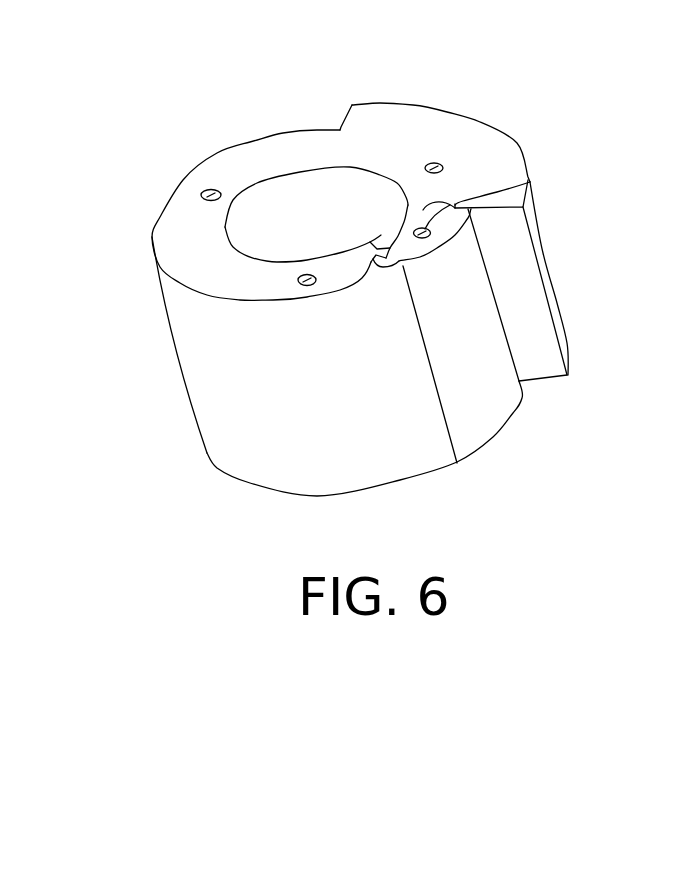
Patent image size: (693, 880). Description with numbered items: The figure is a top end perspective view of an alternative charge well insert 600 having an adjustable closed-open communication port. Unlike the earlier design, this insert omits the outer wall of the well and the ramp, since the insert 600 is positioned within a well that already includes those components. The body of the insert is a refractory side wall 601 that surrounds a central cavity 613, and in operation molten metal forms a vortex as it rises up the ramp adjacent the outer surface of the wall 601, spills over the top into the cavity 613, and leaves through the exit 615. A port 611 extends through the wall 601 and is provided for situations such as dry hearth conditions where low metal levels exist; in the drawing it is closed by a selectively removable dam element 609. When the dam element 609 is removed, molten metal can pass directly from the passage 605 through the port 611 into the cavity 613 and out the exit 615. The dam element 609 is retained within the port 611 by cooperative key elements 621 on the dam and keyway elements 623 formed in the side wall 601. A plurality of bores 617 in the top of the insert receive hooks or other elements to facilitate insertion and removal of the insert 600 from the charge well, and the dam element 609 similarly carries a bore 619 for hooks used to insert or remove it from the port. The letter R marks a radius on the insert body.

The charge well insert 600 is at (513, 452).
The refractory wall 601 is at (332, 432).
The passage 605 is at (553, 398).
The dam element 609 is at (463, 310).
The port 611 is at (372, 212).
The cavity 613 is at (300, 212).
The exit 615 is at (317, 249).
The bores 617 is at (200, 191).
The bore 619 is at (530, 182).
The key element 621 is at (406, 216).
The keyway element 623 is at (372, 260).
The radius R is at (457, 463).